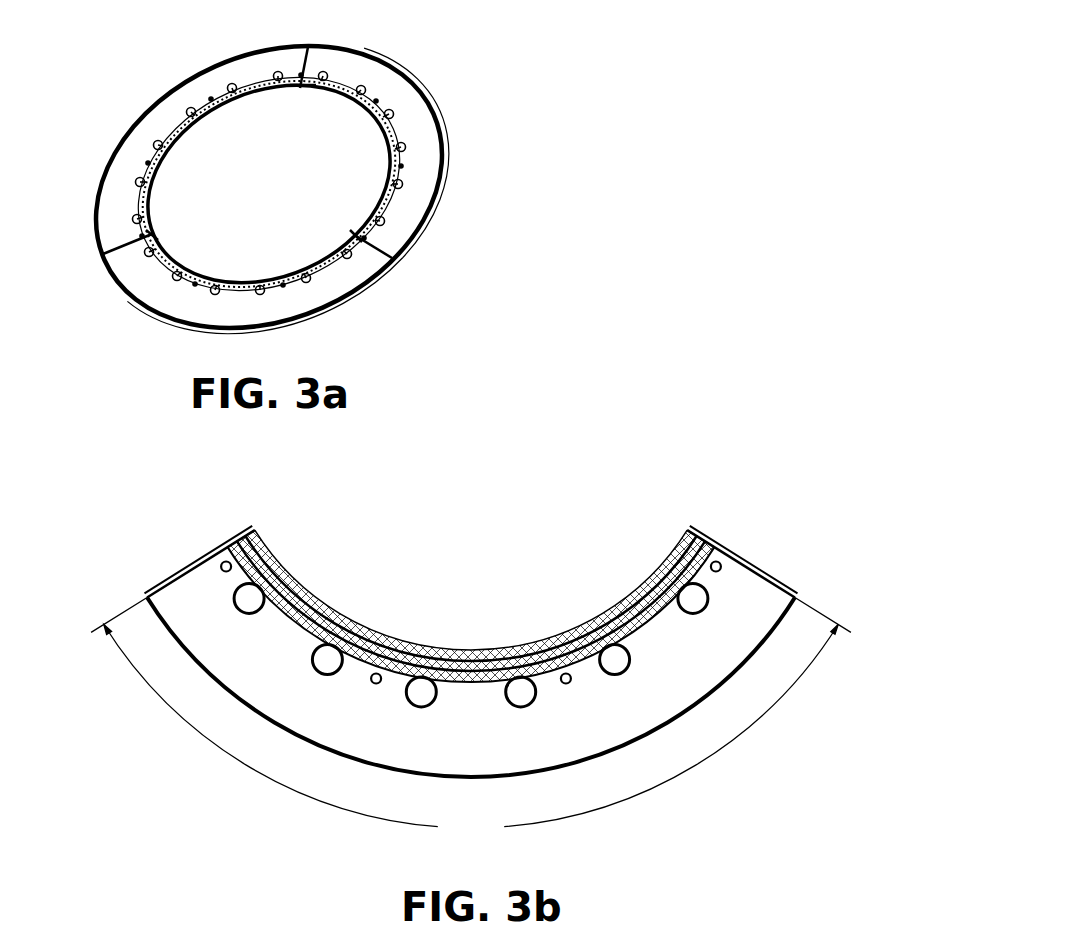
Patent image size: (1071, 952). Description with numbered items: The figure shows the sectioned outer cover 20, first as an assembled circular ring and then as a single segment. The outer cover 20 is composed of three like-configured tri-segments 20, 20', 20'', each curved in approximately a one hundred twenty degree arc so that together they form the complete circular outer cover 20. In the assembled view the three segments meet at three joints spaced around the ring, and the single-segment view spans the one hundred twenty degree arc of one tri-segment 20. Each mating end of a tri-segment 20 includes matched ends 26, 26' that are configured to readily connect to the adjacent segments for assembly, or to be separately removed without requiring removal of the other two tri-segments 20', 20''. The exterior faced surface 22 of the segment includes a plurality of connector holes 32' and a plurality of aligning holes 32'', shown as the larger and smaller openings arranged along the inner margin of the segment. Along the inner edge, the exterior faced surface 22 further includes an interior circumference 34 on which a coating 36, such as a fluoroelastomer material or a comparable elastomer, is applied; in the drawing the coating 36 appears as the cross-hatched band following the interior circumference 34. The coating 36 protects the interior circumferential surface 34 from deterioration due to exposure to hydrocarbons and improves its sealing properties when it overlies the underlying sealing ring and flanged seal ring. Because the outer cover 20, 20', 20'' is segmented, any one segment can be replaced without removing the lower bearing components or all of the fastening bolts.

In FIG. 3A, the outer cover 20 is at (269, 190).
In FIG. 3B, the outer cover 20 is at (471, 606).
In FIG. 3A, the tri-segment 20' is at (444, 152).
In FIG. 3A, the tri-segment 20'' is at (264, 203).
In FIG. 3B, the exterior faced surface 22 is at (452, 757).
In FIG. 3A, the matched end 26 is at (211, 136).
In FIG. 3B, the matched end 26 is at (751, 554).
In FIG. 3A, the matched end 26' is at (254, 169).
In FIG. 3B, the matched end 26' is at (181, 562).
In FIG. 3B, the connector holes 32' is at (471, 627).
In FIG. 3B, the aligning holes 32'' is at (471, 579).
In FIG. 3B, the interior circumference 34 is at (443, 647).
In FIG. 3B, the coating 36 is at (393, 643).